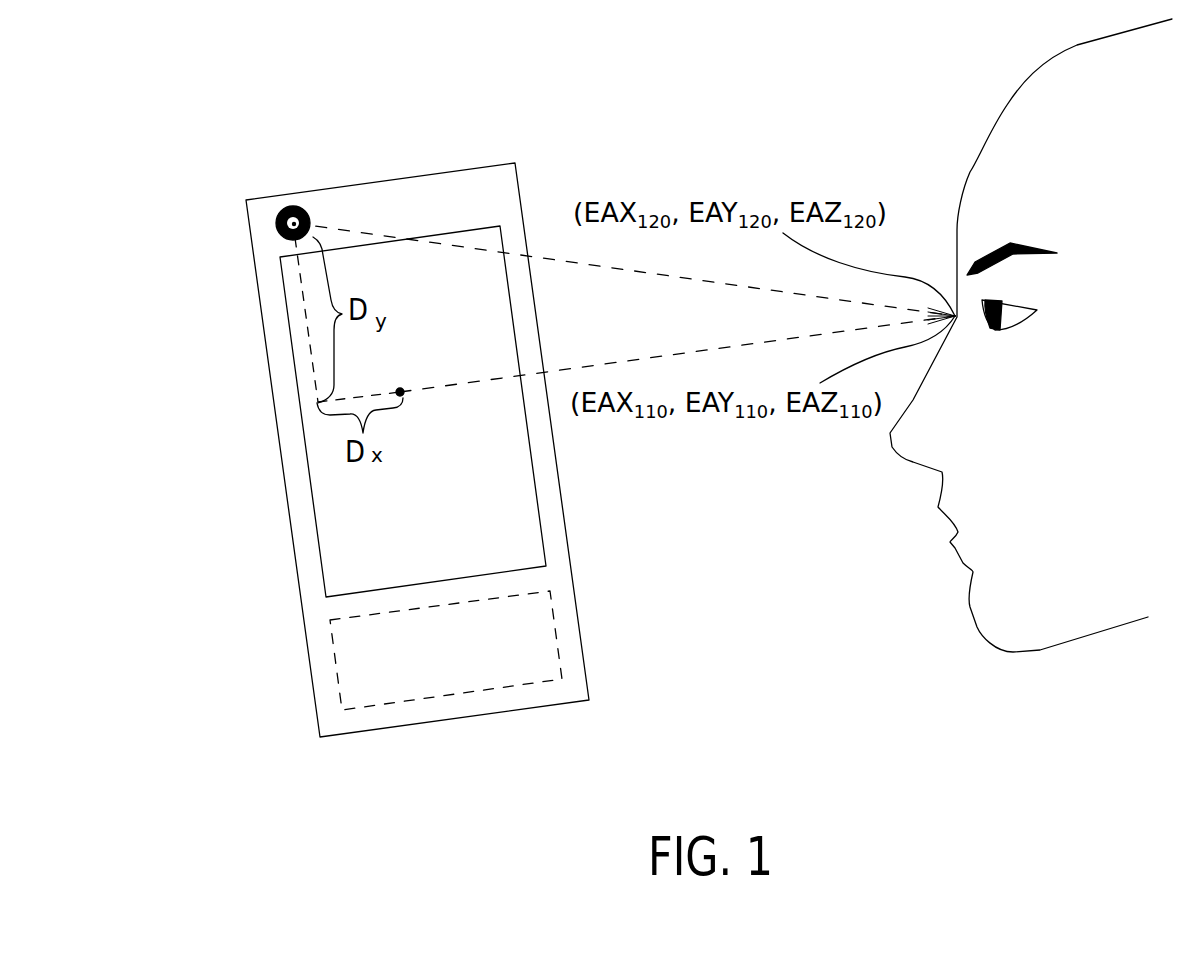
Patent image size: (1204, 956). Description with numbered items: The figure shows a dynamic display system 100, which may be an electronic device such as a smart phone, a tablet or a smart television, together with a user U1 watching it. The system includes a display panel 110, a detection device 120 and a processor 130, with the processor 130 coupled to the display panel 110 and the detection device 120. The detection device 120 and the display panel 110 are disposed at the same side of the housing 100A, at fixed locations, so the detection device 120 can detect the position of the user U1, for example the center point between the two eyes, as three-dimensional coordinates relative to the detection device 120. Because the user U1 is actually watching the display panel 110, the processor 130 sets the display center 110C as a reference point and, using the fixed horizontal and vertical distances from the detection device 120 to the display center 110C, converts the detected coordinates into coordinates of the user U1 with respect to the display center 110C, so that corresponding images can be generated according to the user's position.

The dynamic display system 100 is at (556, 105).
The housing 100A is at (408, 174).
The display panel 110 is at (283, 287).
The display center 110C is at (402, 393).
The detection device 120 is at (293, 207).
The processor 130 is at (353, 668).
The user U1 is at (1007, 105).